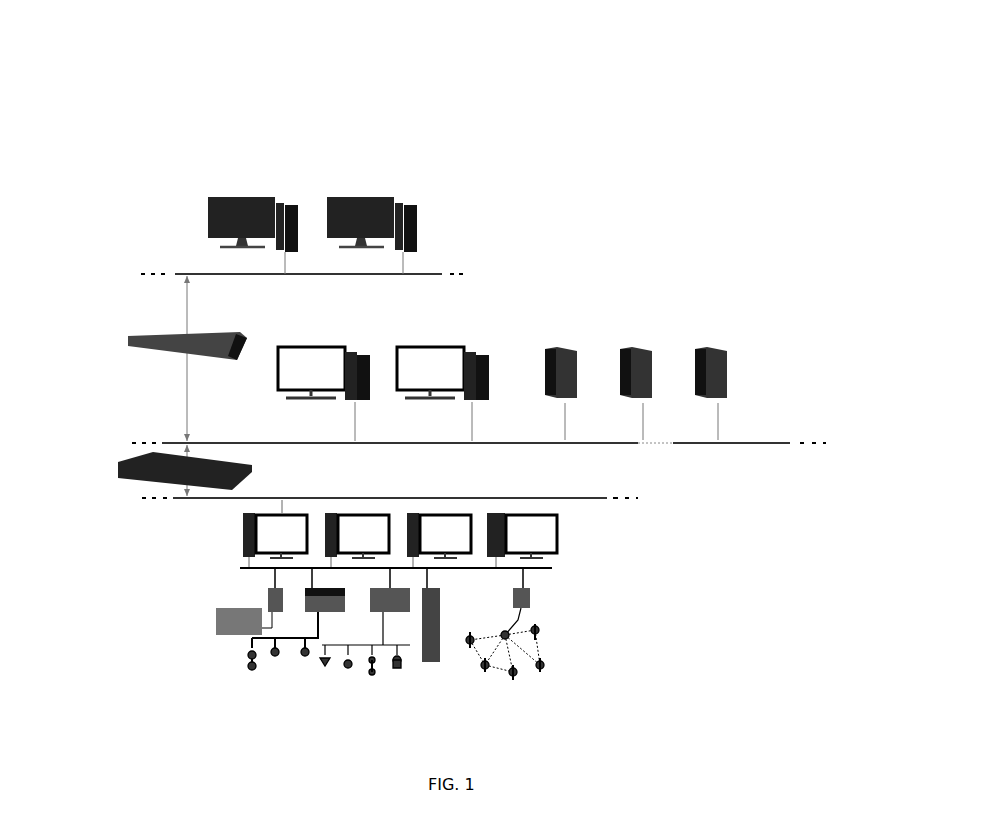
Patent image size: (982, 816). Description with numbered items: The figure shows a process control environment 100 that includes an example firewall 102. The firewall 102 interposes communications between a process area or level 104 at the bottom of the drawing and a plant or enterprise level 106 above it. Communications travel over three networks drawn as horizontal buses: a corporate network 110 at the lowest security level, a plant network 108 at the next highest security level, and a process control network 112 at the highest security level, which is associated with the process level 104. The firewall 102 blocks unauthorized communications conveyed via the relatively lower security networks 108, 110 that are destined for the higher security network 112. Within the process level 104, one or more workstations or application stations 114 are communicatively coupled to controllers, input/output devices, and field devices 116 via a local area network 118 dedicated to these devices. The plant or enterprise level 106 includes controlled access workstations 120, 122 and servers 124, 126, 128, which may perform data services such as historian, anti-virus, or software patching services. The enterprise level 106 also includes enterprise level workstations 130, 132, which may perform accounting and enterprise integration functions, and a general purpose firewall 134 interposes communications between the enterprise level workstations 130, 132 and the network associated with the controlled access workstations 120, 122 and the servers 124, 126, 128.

The process control environment 100 is at (440, 120).
The firewall 102 is at (118, 462).
The process level 104 is at (163, 604).
The plant or enterprise level 106 is at (735, 230).
The plant network 108 is at (752, 443).
The corporate network 110 is at (443, 271).
The process control network 112 is at (592, 498).
The workstations or application stations 114 is at (652, 542).
The field devices 116 is at (653, 612).
The local area network 118 is at (537, 568).
The controlled access workstation 120 is at (310, 347).
The controlled access workstation 122 is at (420, 347).
The server 124 is at (553, 347).
The server 126 is at (630, 347).
The server 128 is at (707, 347).
The enterprise level workstation 130 is at (215, 197).
The enterprise level workstation 132 is at (377, 197).
The general purpose firewall 134 is at (140, 336).